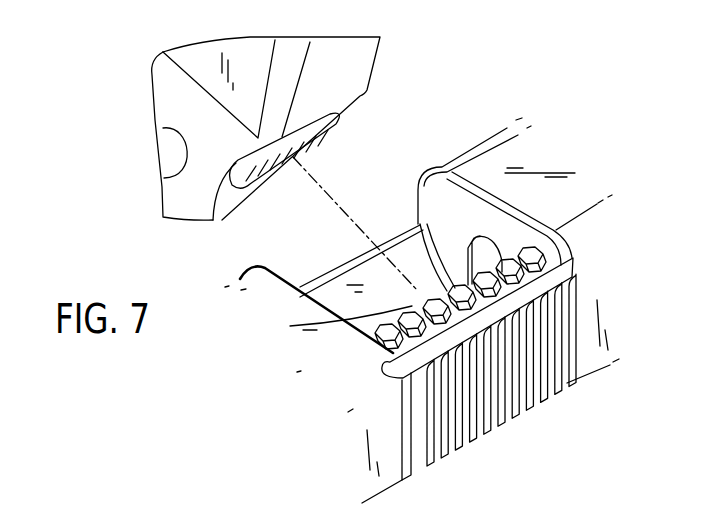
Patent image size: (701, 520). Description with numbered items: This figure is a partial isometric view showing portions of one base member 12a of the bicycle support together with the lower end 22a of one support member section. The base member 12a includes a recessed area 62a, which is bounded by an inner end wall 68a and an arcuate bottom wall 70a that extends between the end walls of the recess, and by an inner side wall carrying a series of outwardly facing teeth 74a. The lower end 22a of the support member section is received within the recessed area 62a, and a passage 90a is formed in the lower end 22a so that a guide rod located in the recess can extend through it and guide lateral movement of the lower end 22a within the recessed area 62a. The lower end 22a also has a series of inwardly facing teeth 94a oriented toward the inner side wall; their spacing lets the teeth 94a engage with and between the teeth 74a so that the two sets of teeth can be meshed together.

The base member 12a is at (494, 124).
The lower end 22a is at (162, 91).
The recessed area 62a is at (322, 252).
The inner end wall 68a is at (448, 200).
The arcuate bottom wall 70a is at (432, 242).
The outwardly facing teeth 74a is at (400, 315).
The passage 90a is at (176, 150).
The inwardly facing teeth 94a is at (338, 128).